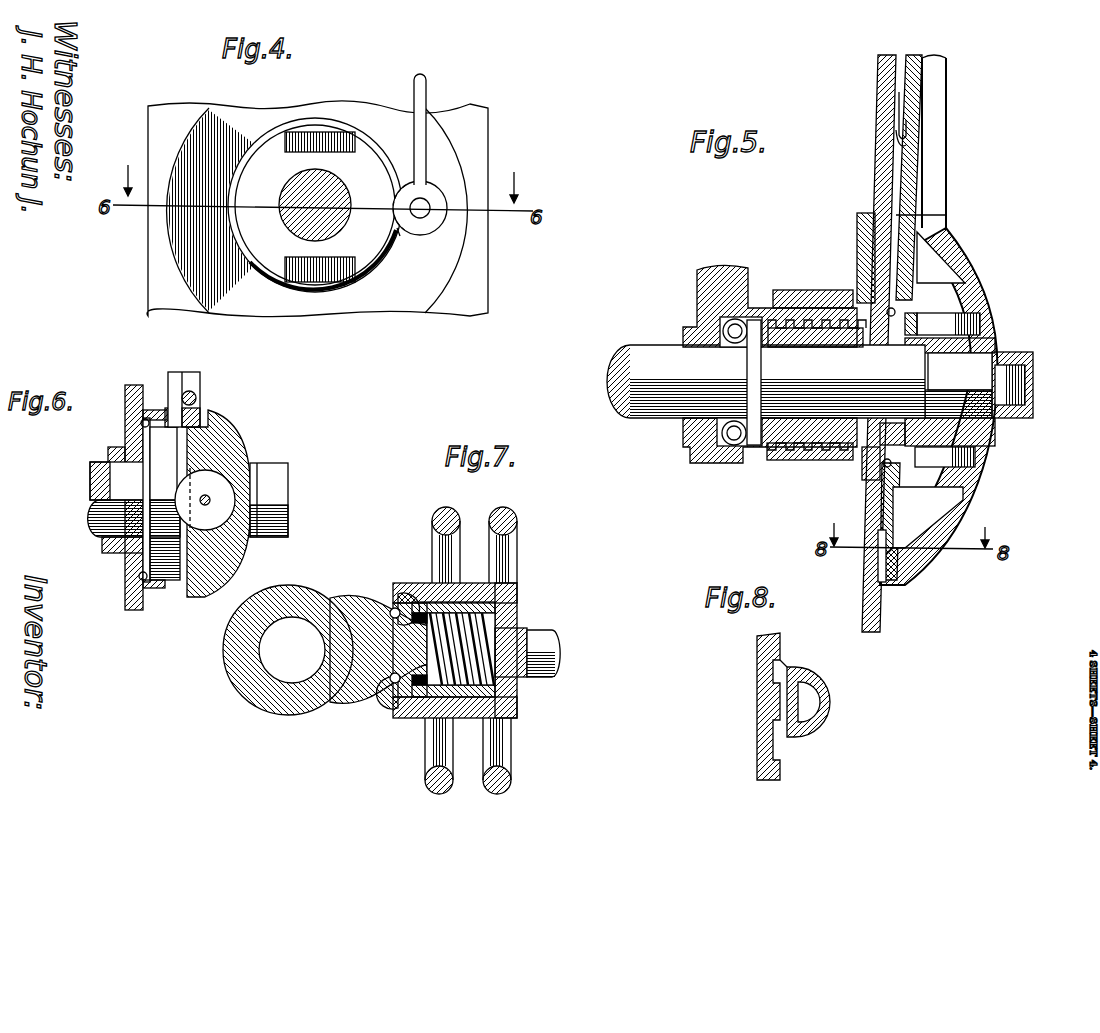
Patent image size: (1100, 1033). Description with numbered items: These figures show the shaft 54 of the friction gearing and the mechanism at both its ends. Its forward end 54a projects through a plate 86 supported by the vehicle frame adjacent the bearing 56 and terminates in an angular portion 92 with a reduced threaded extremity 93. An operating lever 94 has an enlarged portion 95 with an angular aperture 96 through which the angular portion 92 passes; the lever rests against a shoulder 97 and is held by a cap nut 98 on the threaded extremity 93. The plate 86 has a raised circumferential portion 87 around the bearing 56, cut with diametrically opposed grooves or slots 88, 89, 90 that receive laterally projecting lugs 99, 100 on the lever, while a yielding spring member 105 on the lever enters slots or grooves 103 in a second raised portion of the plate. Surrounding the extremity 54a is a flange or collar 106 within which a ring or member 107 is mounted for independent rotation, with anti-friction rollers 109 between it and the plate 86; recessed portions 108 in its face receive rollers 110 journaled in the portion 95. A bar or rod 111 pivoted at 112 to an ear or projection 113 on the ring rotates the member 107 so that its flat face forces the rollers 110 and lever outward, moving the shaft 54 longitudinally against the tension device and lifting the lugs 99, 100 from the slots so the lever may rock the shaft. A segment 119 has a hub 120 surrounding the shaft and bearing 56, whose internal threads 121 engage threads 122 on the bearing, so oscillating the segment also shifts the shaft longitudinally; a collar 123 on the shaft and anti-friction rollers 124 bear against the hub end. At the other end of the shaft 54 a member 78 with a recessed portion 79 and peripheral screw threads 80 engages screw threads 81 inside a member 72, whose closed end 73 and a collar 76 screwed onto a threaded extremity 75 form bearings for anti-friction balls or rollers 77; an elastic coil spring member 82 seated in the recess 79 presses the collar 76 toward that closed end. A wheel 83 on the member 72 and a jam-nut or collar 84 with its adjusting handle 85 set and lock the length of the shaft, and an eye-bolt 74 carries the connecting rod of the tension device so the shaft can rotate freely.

In FIG. 6, the shaft 54 is at (112, 520).
In FIG. 7, the shaft 54 is at (553, 654).
In FIG. 5, the shaft 54 is at (656, 400).
In FIG. 4, the forward end of the shaft 54a is at (327, 182).
In FIG. 5, the forward end of the shaft 54a is at (915, 372).
In FIG. 6, the bearing 56 is at (116, 450).
In FIG. 5, the bearing 56 is at (770, 455).
In FIG. 7, the member 72 is at (408, 583).
In FIG. 7, the neck 73 is at (362, 618).
In FIG. 7, the eye-bolt 74 is at (272, 702).
In FIG. 7, the screw threaded extremity 75 is at (410, 662).
In FIG. 7, the collar 76 is at (407, 718).
In FIG. 7, the anti-friction balls or rollers 77 is at (383, 598).
In FIG. 7, the member 78 is at (516, 630).
In FIG. 7, the recessed portion 79 is at (515, 691).
In FIG. 7, the peripheral screw threads 80 is at (514, 608).
In FIG. 7, the screw threads 81 is at (472, 600).
In FIG. 7, the elastic member 82 is at (512, 588).
In FIG. 7, the wheel 83 is at (446, 508).
In FIG. 7, the jam-nut or collar 84 is at (513, 716).
In FIG. 7, the adjusting handle 85 is at (511, 779).
In FIG. 4, the plate 86 is at (478, 309).
In FIG. 6, the plate 86 is at (128, 388).
In FIG. 5, the plate 86 is at (882, 175).
In FIG. 8, the plate 86 is at (757, 657).
In FIG. 5, the raised circumferential portion 87 is at (898, 213).
In FIG. 8, the groove or slot 88 is at (774, 684).
In FIG. 8, the groove or slot 89 is at (774, 723).
In FIG. 8, the groove or slot 90 is at (771, 770).
In FIG. 5, the angular portion 92 is at (992, 366).
In FIG. 5, the reduced threaded extremity 93 is at (1022, 393).
In FIG. 5, the operating lever 94 is at (940, 202).
In FIG. 8, the operating lever 94 is at (802, 702).
In FIG. 6, the enlarged portion 95 is at (216, 425).
In FIG. 5, the enlarged portion 95 is at (980, 302).
In FIG. 5, the angular aperture 96 is at (968, 348).
In FIG. 5, the shoulder 97 is at (922, 368).
In FIG. 6, the pin 98 is at (278, 480).
In FIG. 5, the pin 98 is at (1018, 362).
In FIG. 5, the lug 99 is at (930, 216).
In FIG. 5, the lug 100 is at (886, 560).
In FIG. 8, the lug 100 is at (788, 670).
In FIG. 5, the slots or grooves 103 is at (900, 142).
In FIG. 5, the yielding member 105 is at (903, 100).
In FIG. 4, the flange or collar 106 is at (394, 262).
In FIG. 6, the flange or collar 106 is at (146, 584).
In FIG. 5, the flange or collar 106 is at (890, 478).
In FIG. 4, the ring or member 107 is at (256, 230).
In FIG. 6, the ring or member 107 is at (166, 583).
In FIG. 5, the ring or member 107 is at (882, 354).
In FIG. 4, the recessed portions 108 is at (313, 131).
In FIG. 6, the recessed portions 108 is at (163, 500).
In FIG. 6, the anti-friction rollers 109 is at (147, 420).
In FIG. 5, the anti-friction rollers 109 is at (889, 310).
In FIG. 6, the rollers 110 is at (215, 516).
In FIG. 5, the rollers 110 is at (946, 316).
In FIG. 4, the bar or rod 111 is at (430, 96).
In FIG. 6, the bar or rod 111 is at (198, 400).
In FIG. 4, the pivotal connection 112 is at (424, 206).
In FIG. 6, the pivotal connection 112 is at (192, 396).
In FIG. 4, the ear or projection 113 is at (398, 236).
In FIG. 6, the ear or projection 113 is at (180, 372).
In FIG. 5, the segment 119 is at (698, 272).
In FIG. 5, the hub 120 is at (706, 303).
In FIG. 5, the internal threads 121 is at (790, 295).
In FIG. 5, the threads 122 is at (820, 320).
In FIG. 5, the collar 123 is at (748, 376).
In FIG. 5, the anti-friction rollers 124 is at (720, 331).